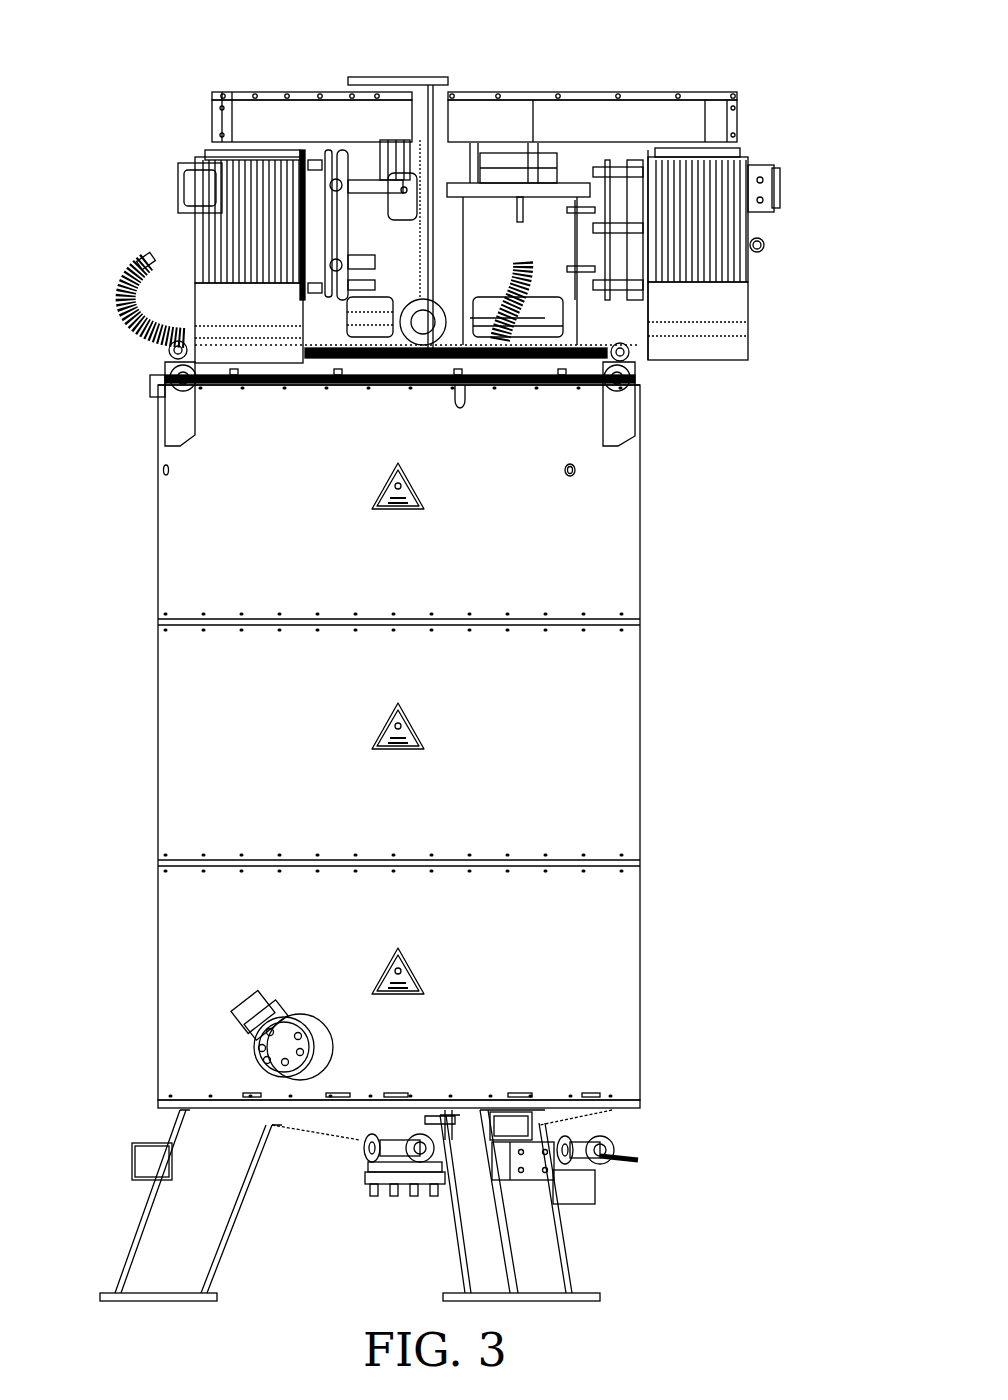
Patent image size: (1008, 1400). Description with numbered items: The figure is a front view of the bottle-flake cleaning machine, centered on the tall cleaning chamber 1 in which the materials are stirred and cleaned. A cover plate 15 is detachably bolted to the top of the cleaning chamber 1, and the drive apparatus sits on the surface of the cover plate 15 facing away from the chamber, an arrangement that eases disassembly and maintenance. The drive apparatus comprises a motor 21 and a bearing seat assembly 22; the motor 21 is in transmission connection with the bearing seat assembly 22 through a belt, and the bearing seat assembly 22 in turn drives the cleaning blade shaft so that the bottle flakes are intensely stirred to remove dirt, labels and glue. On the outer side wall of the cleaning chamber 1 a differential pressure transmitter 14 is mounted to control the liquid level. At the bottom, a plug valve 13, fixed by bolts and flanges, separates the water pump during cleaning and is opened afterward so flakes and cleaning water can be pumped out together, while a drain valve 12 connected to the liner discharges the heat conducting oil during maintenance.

The cleaning chamber 1 is at (180, 913).
The drain valve 12 is at (600, 1156).
The plug valve 13 is at (384, 1192).
The differential pressure transmitter 14 is at (252, 1009).
The cover plate 15 is at (318, 367).
The motor 21 is at (710, 310).
The bearing seat assembly 22 is at (540, 215).